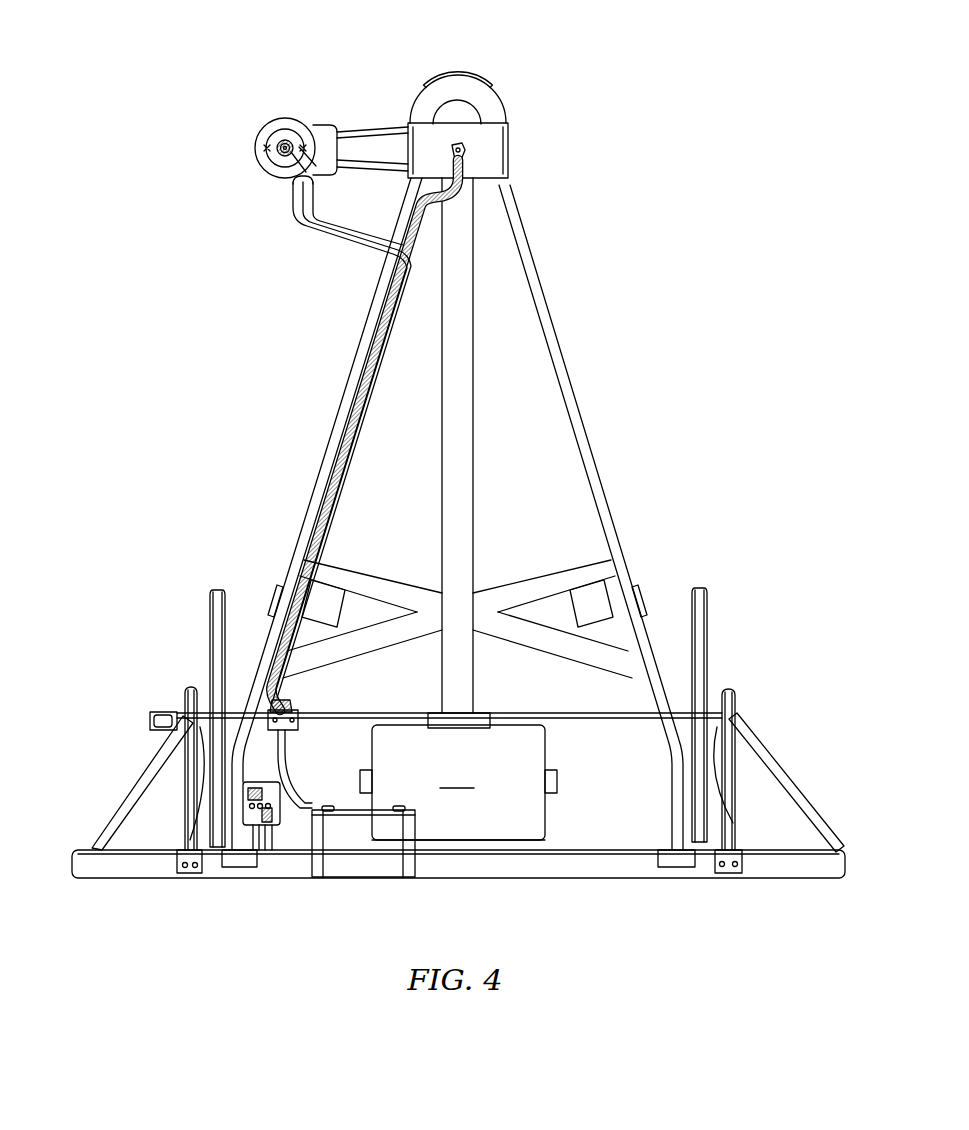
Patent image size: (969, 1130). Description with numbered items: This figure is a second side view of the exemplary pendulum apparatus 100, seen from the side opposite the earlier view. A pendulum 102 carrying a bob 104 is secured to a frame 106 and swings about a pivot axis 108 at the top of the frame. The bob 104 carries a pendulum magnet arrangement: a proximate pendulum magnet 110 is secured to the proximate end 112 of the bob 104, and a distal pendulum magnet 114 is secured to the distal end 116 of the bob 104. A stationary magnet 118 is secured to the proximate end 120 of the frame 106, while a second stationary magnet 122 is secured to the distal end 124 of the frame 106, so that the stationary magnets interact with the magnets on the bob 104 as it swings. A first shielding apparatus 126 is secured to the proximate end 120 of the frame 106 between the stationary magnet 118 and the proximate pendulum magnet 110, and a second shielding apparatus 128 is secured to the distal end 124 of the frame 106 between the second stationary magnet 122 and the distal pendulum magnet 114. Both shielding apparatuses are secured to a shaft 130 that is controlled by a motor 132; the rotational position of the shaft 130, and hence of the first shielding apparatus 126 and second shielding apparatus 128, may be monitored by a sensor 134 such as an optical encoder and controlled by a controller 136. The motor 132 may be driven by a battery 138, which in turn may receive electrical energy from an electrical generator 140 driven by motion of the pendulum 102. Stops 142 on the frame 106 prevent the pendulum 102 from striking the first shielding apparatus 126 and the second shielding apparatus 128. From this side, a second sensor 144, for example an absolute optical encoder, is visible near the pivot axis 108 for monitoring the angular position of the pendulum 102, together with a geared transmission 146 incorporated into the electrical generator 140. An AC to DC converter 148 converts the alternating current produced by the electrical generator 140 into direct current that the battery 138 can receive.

The pendulum apparatus 100 is at (630, 45).
The pendulum 102 is at (474, 447).
The bob 104 is at (457, 776).
The frame 106 is at (576, 401).
The pivot axis 108 is at (461, 144).
The proximate pendulum magnet 110 is at (360, 781).
The proximate end of the bob 112 is at (457, 782).
The distal pendulum magnet 114 is at (557, 781).
The distal end of the bob 116 is at (533, 822).
The stationary magnet 118 is at (188, 812).
The proximate end of the frame 120 is at (128, 775).
The second stationary magnet 122 is at (733, 812).
The distal end of the frame 124 is at (785, 781).
The first shielding apparatus 126 is at (210, 628).
The second shielding apparatus 128 is at (707, 628).
The shaft 130 is at (566, 712).
The motor 132 is at (183, 700).
The sensor 134 is at (150, 717).
The controller 136 is at (260, 828).
The battery 138 is at (368, 852).
The electrical generator 140 is at (258, 132).
The stops 142 is at (343, 635).
The second sensor 144 is at (466, 150).
The geared transmission 146 is at (311, 122).
The AC to DC converter 148 is at (296, 710).